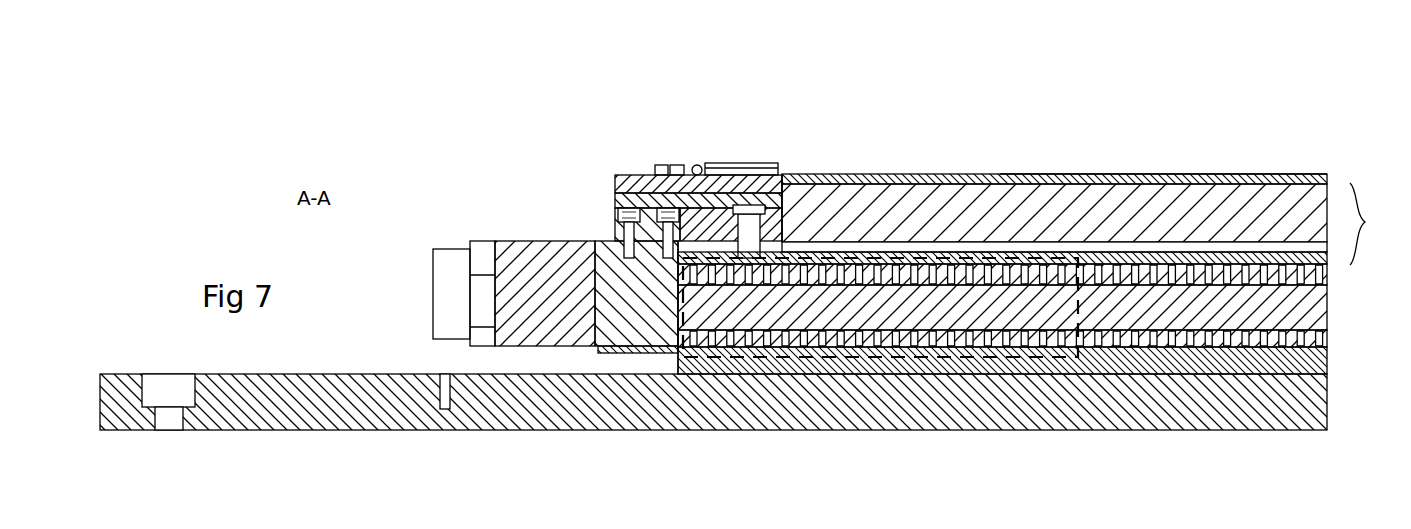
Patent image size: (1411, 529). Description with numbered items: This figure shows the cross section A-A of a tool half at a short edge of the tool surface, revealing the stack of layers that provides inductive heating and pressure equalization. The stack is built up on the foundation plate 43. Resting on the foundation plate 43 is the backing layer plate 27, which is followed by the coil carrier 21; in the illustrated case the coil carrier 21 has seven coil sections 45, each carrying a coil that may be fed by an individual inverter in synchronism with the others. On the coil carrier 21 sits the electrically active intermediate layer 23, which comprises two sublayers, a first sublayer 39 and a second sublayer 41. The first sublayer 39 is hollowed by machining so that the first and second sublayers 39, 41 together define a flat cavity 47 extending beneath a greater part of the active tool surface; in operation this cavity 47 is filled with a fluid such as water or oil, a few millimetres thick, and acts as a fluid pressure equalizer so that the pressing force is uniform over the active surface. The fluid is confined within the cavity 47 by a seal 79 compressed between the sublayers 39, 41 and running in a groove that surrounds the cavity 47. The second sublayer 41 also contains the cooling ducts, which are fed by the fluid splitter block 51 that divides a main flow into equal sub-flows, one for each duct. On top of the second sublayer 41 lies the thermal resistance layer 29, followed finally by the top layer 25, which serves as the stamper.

The coil carrier 21 is at (743, 305).
The electrically active intermediate layer 23 is at (1365, 222).
The top layer 25 is at (1128, 176).
The backing layer plate 27 is at (678, 358).
The thermal resistance layer 29 is at (1272, 176).
The first sublayer 39 is at (1327, 258).
The second sublayer 41 is at (1328, 206).
The foundation plate 43 is at (298, 410).
The coil sections 45 is at (962, 360).
The flat cavity 47 is at (1045, 248).
The fluid splitter block 51 is at (556, 271).
The seal 79 is at (800, 234).